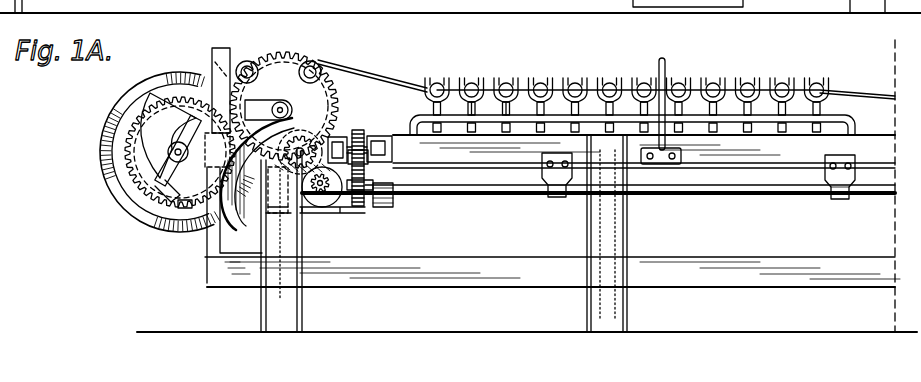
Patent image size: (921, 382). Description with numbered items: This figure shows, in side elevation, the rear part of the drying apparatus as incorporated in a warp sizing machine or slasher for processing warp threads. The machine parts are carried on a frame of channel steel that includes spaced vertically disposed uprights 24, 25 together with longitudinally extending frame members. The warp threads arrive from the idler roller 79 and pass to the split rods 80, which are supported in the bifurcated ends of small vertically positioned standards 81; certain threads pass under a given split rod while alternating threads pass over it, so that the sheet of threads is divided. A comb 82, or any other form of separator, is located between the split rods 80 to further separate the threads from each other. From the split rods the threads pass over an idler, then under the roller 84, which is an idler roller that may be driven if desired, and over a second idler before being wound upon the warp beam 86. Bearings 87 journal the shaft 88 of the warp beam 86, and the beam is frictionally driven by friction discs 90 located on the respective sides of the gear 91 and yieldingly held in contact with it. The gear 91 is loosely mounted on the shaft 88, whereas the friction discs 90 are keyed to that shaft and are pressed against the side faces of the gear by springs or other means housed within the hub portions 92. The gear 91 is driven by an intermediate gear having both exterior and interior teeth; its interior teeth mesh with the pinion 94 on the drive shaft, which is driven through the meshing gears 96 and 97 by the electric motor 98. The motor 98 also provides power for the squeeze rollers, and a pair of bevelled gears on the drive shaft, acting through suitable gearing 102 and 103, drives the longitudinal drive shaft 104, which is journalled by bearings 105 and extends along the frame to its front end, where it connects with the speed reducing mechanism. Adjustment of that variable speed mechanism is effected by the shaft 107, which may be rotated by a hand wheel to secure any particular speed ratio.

The upright 24 is at (620, 233).
The upright 25 is at (294, 302).
The idler roller 79 is at (386, 74).
The split rods 80 is at (810, 83).
The standards 81 is at (480, 103).
The comb 82 is at (667, 68).
The roller 84 is at (272, 60).
The warp beam 86 is at (140, 225).
The bearings 87 is at (160, 160).
The shaft 88 is at (165, 149).
The friction discs 90 is at (187, 213).
The gear 91 is at (135, 118).
The hub portions 92 is at (302, 140).
The pinion 94 is at (255, 210).
The gear 96 is at (296, 222).
The gear 97 is at (320, 212).
The electric motor 98 is at (332, 207).
The gearing 102 is at (352, 132).
The gearing 103 is at (398, 202).
The longitudinal drive shaft 104 is at (546, 197).
The bearings 105 is at (838, 194).
The shaft 107 is at (678, 7).